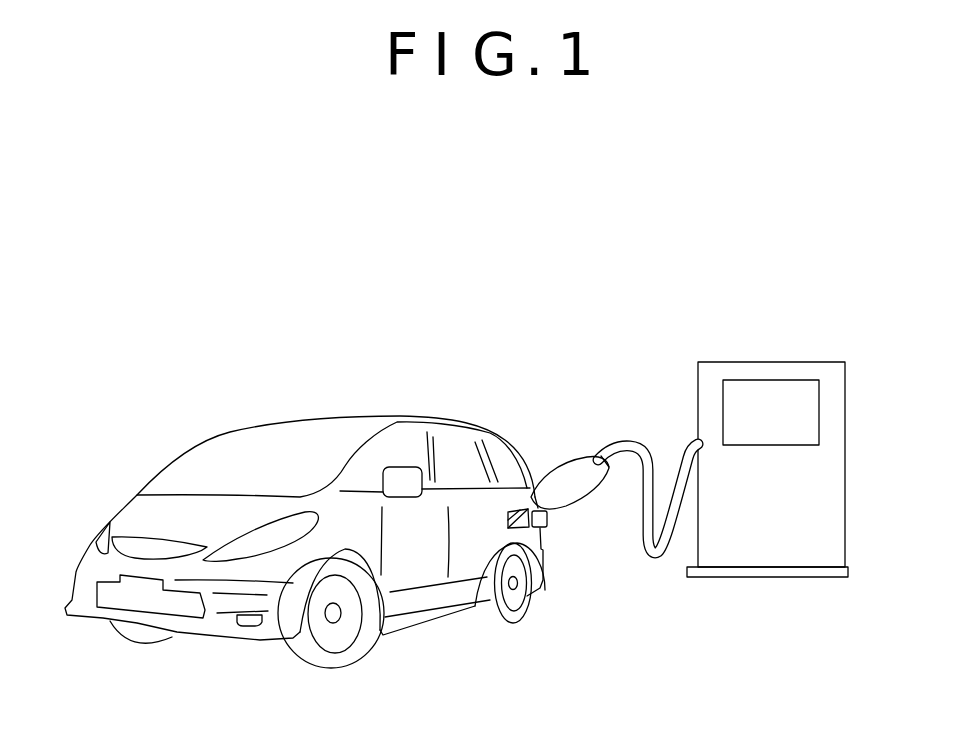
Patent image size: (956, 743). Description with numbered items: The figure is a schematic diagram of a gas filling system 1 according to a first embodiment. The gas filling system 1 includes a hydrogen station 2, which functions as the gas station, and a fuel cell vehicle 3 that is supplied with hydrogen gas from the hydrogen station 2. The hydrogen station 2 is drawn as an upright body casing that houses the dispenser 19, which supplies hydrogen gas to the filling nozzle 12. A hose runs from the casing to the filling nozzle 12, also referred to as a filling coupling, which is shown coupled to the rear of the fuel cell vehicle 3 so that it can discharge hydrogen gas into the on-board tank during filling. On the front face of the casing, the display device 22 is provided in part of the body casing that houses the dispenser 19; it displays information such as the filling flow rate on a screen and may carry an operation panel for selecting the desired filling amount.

The gas filling system 1 is at (506, 277).
The hydrogen station 2 is at (873, 333).
The fuel cell vehicle 3 is at (393, 415).
The filling nozzle 12 is at (575, 478).
The dispenser 19 is at (800, 515).
The display device 22 is at (810, 433).